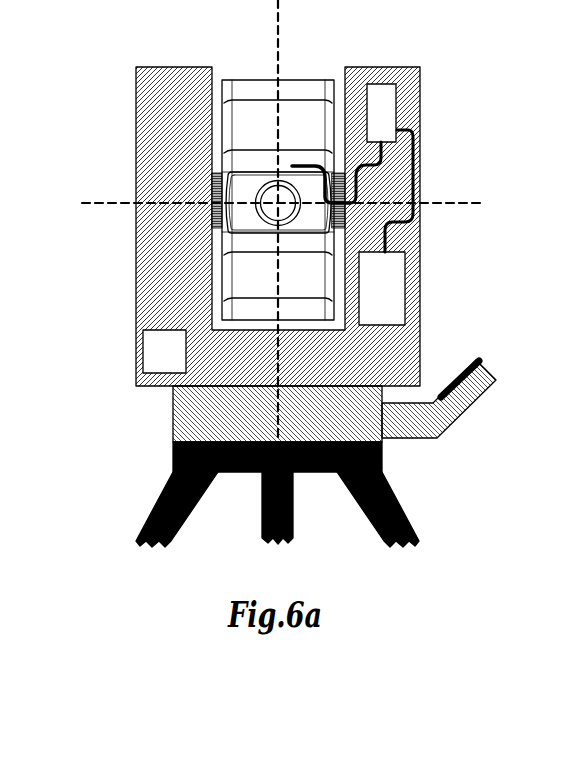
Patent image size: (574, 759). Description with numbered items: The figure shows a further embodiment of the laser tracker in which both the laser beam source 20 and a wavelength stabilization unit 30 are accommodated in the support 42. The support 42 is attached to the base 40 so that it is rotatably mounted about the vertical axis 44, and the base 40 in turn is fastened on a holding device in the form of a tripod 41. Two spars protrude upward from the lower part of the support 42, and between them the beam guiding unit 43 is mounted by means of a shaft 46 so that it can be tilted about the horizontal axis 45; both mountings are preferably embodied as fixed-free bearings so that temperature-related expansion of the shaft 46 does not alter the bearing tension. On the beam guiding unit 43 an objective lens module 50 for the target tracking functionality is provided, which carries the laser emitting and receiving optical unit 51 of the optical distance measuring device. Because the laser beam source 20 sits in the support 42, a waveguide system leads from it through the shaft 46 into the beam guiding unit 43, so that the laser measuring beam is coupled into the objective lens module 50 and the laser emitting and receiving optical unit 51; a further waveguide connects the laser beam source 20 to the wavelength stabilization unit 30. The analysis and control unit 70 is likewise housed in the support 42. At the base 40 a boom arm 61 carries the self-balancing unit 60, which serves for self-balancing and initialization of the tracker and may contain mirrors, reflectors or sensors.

The laser beam source 20 is at (387, 110).
The wavelength stabilization unit 30 is at (389, 307).
The base 40 is at (198, 430).
The tripod 41 is at (175, 512).
The support 42 is at (390, 359).
The beam guiding unit 43 is at (243, 310).
The vertical axis 44 is at (278, 67).
The horizontal axis 45 is at (467, 202).
The shaft 46 is at (340, 213).
The objective lens module 50 is at (243, 192).
The laser emitting and receiving optical unit 51 is at (273, 190).
The self-balancing unit 60 is at (460, 390).
The boom arm 61 is at (425, 425).
The analysis and control unit 70 is at (168, 351).